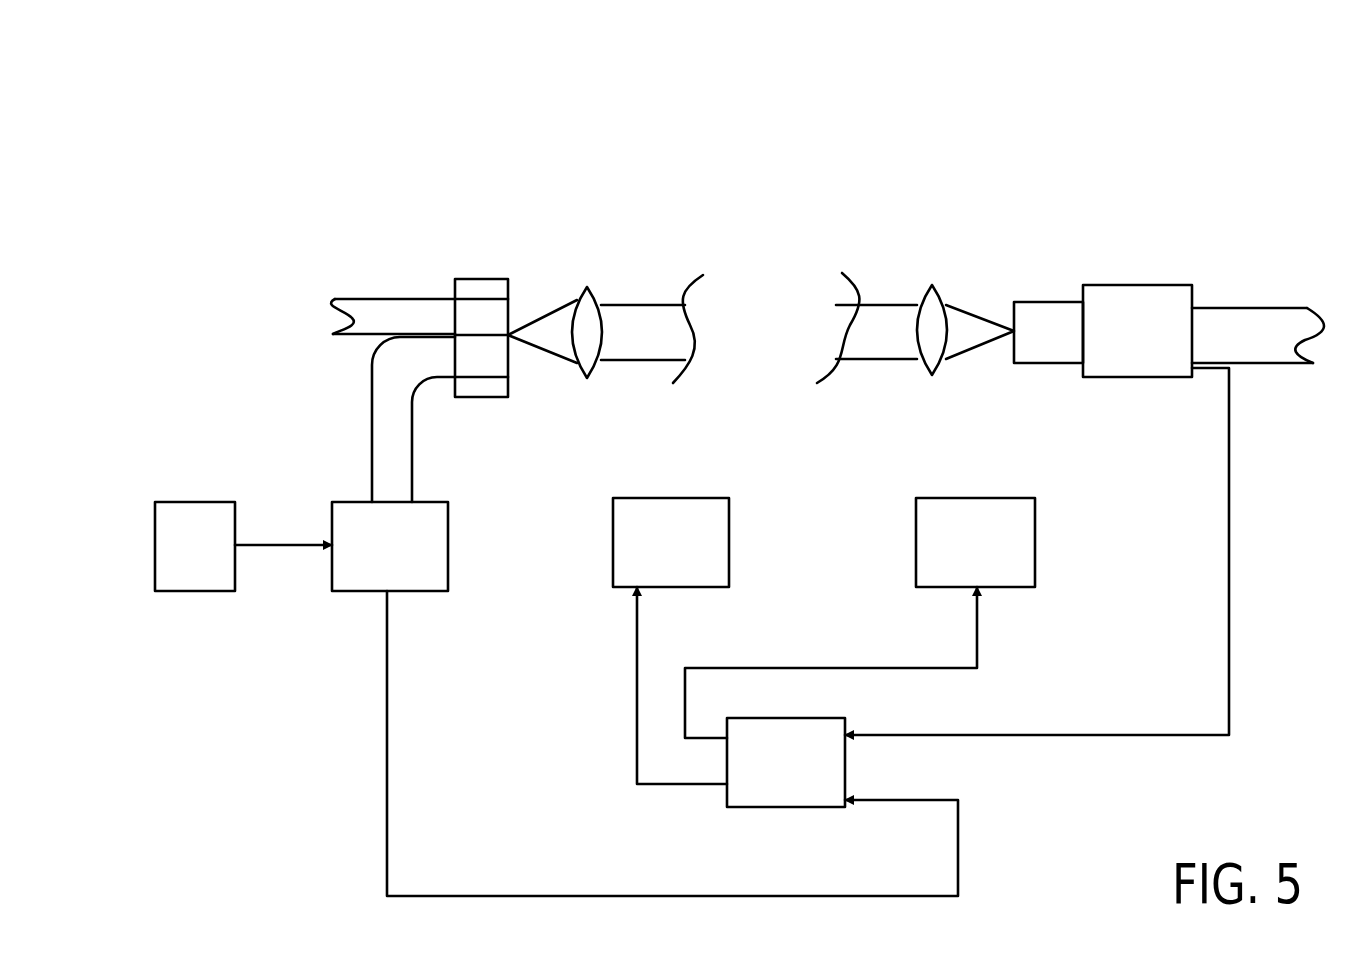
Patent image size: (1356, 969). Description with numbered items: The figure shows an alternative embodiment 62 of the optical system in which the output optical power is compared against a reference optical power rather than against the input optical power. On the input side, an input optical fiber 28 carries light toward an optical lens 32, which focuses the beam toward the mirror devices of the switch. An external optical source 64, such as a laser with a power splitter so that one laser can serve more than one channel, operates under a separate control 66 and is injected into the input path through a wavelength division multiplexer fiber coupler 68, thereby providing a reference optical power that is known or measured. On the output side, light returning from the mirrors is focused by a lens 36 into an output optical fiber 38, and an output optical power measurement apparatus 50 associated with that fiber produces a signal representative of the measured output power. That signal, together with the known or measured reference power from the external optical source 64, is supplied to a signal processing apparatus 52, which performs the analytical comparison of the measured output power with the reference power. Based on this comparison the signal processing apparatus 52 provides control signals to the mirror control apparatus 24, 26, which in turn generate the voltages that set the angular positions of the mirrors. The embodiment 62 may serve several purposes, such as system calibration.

The alternative embodiment 62 is at (297, 190).
The input optical fiber 28 is at (377, 299).
The wavelength division multiplexer fiber coupler 68 is at (473, 279).
The optical lens 32 is at (585, 287).
The lens 36 is at (932, 284).
The output optical fiber 38 is at (1033, 302).
The output optical power measurement apparatus 50 is at (1112, 377).
The mirror control apparatus 24 is at (939, 498).
The mirror control apparatus 26 is at (643, 498).
The signal processing apparatus 52 is at (742, 807).
The external optical source 64 is at (343, 591).
The separate control 66 is at (185, 591).